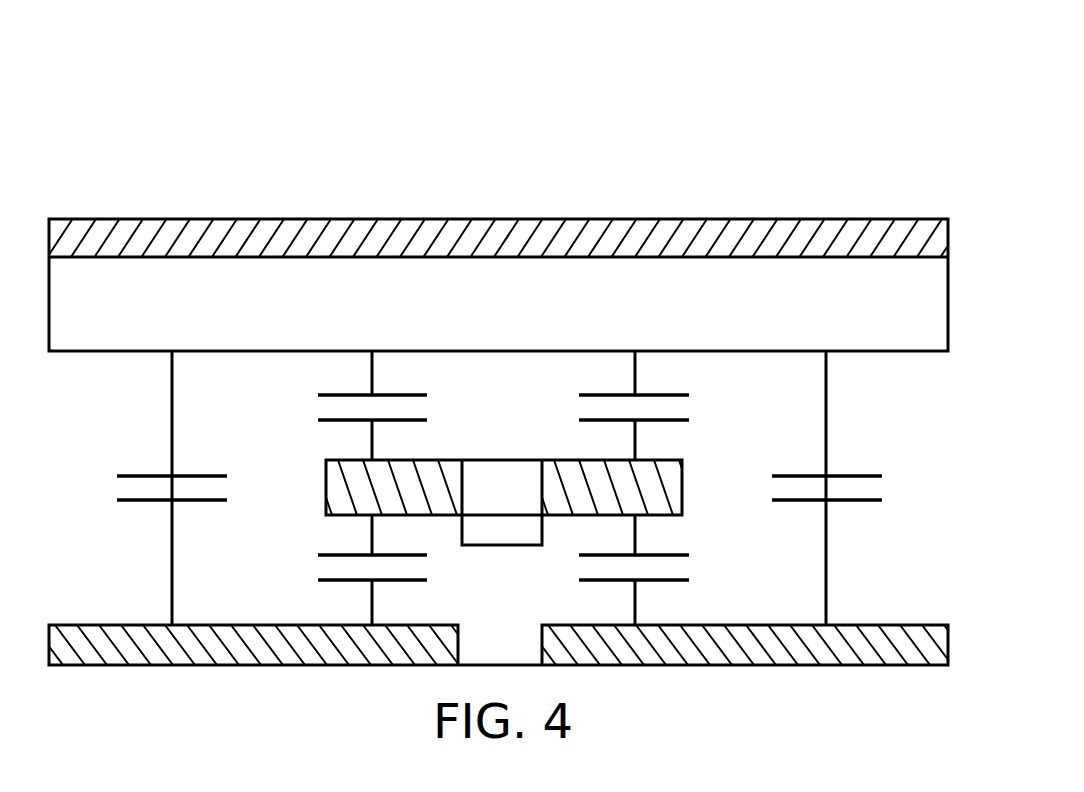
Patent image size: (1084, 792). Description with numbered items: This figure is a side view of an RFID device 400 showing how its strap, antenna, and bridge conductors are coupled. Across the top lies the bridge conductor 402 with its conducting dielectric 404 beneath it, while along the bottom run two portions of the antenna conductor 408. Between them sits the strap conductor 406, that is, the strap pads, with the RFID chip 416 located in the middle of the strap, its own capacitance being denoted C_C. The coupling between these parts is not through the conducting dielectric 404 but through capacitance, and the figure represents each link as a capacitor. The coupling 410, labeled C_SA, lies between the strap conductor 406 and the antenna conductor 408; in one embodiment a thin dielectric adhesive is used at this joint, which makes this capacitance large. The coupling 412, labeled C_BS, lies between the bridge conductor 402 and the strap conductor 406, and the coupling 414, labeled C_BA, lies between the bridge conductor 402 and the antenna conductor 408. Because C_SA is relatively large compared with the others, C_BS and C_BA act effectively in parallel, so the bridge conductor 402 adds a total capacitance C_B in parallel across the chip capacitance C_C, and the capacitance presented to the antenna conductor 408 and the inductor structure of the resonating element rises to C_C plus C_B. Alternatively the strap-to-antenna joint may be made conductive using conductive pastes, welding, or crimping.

The RFID device 400 is at (714, 93).
The bridge conductor 402 is at (718, 219).
The conducting dielectric 404 is at (870, 351).
The strap conductor 406 is at (324, 492).
The antenna conductor 408 is at (835, 666).
The coupling 410 is at (330, 555).
The coupling 412 is at (316, 421).
The coupling 414 is at (157, 475).
The RFID chip 416 is at (505, 546).